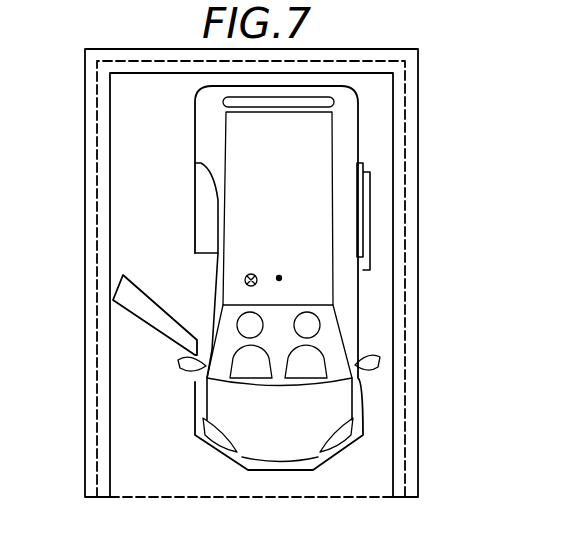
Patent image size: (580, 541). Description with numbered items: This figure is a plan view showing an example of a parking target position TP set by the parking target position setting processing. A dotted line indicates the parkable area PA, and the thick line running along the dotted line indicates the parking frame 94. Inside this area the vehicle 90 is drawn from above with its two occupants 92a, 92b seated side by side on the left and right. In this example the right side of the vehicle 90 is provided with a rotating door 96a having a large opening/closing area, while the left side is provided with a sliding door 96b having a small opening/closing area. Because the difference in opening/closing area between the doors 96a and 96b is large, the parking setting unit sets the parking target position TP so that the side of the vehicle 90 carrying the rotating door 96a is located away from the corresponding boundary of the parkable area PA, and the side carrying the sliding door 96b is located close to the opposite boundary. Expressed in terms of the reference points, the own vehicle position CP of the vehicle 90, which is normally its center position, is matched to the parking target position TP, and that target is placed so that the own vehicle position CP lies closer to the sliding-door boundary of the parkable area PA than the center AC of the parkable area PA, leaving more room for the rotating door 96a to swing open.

The vehicle 90 is at (197, 120).
The parking frame 94 is at (85, 158).
The parkable area PA is at (406, 237).
The rotating door 96a is at (122, 277).
The sliding door 96b is at (370, 190).
The occupant 92a is at (237, 320).
The occupant 92b is at (321, 321).
The center of the parkable area AC is at (250, 274).
The own vehicle position CP is at (303, 256).
The parking target position TP is at (296, 256).